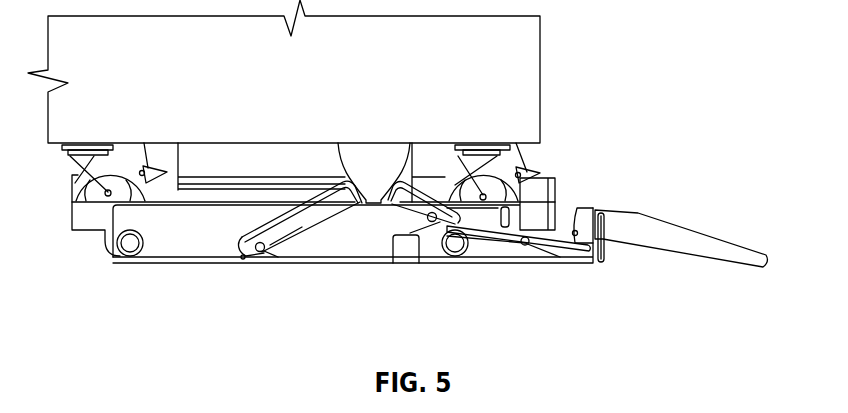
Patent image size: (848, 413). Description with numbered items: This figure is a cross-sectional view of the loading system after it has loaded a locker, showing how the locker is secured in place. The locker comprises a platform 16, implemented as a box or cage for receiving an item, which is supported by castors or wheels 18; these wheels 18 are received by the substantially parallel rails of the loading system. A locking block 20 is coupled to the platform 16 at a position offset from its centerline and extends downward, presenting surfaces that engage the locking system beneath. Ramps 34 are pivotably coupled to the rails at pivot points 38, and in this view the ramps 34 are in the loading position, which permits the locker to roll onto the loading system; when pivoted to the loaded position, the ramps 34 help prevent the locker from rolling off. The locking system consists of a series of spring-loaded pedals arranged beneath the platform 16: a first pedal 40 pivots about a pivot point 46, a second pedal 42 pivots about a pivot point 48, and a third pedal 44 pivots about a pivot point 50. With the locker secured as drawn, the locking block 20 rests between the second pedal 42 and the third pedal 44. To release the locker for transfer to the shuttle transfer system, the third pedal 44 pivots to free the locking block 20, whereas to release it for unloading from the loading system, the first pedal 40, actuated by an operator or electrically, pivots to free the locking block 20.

The platform 16 is at (541, 75).
The castors or wheels 18 is at (517, 175).
The locking block 20 is at (373, 160).
The ramps 34 is at (680, 236).
The pivot points 38 is at (575, 230).
The first pedal 40 is at (562, 250).
The second pedal 42 is at (400, 207).
The third pedal 44 is at (340, 205).
The pivot point 46 is at (527, 247).
The pivot point 48 is at (430, 226).
The pivot point 50 is at (243, 258).